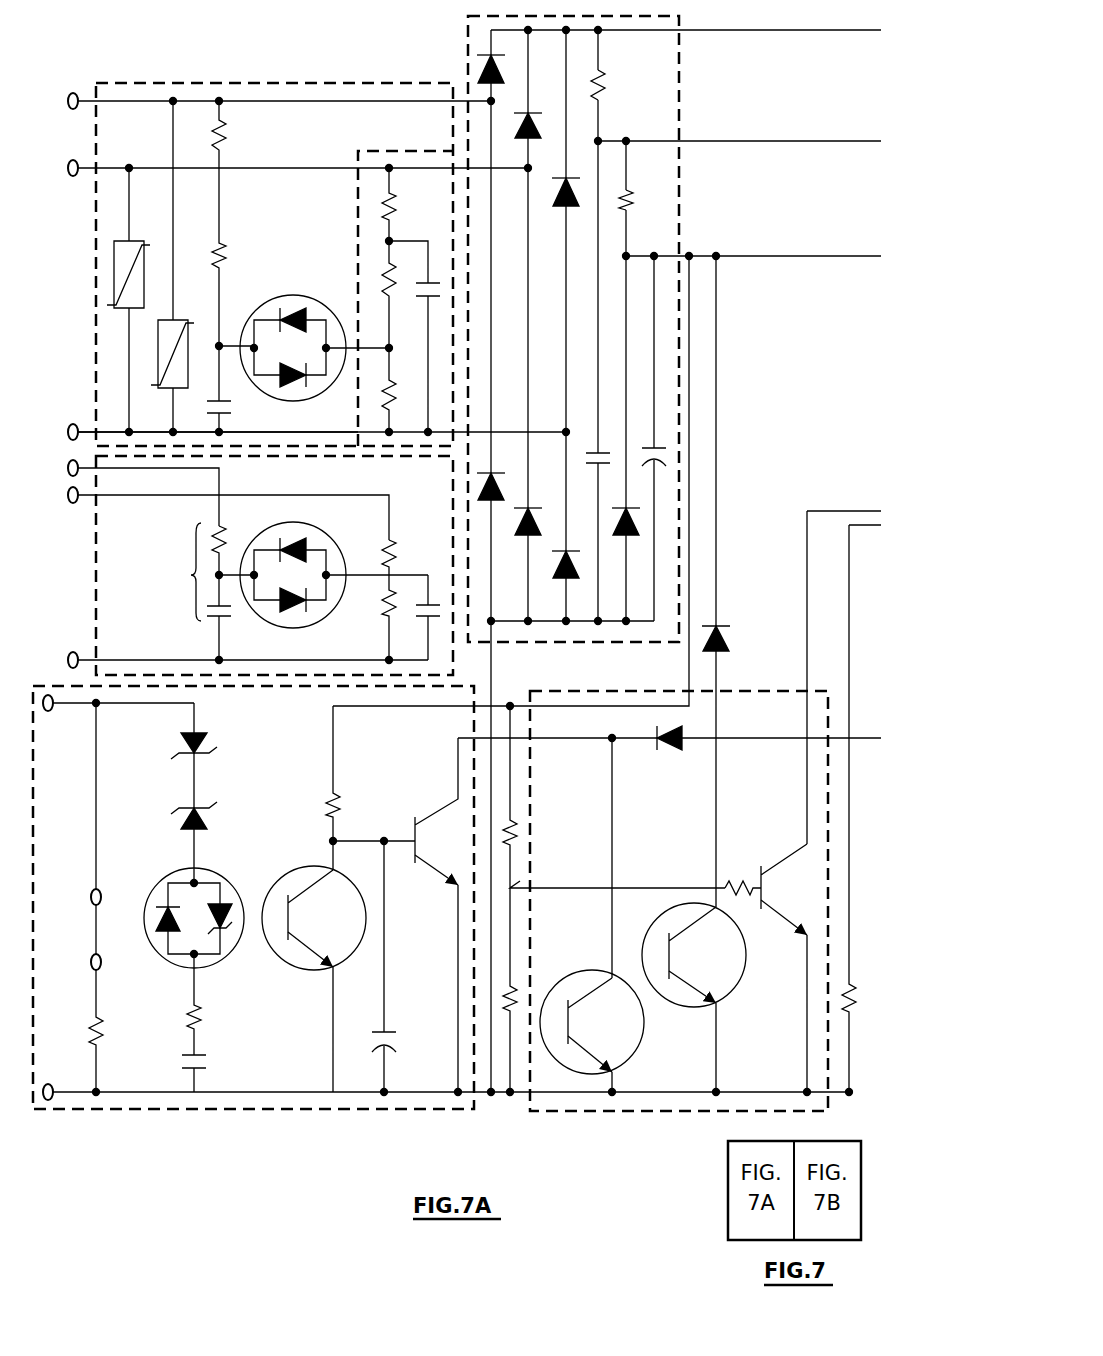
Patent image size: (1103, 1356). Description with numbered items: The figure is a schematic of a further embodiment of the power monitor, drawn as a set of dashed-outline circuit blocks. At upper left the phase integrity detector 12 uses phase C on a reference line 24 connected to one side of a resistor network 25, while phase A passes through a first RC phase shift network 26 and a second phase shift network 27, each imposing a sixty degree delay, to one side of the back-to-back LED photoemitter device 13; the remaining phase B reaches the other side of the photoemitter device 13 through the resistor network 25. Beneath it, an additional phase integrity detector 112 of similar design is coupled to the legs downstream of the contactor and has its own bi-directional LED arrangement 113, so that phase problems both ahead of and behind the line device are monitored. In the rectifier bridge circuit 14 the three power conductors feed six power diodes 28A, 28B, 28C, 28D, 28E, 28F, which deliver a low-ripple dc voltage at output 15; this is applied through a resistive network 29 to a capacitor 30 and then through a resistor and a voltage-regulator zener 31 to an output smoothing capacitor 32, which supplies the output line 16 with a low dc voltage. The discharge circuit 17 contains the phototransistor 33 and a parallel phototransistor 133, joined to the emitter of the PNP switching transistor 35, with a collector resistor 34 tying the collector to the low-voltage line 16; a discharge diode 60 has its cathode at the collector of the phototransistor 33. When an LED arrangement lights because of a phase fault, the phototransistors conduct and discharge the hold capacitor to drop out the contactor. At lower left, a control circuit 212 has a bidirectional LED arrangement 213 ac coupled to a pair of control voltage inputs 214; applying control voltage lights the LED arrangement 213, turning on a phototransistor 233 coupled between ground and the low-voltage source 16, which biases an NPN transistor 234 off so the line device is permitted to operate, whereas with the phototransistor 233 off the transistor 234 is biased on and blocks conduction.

The phase integrity detector 12 is at (318, 80).
The back-to-back LED photoemitter device 13 is at (290, 295).
The rectifier bridge circuit 14 is at (468, 60).
The output 15 is at (762, 27).
The output line 16 is at (718, 253).
The discharge circuit 17 is at (678, 1108).
The reference line 24 is at (290, 430).
The resistor network 25 is at (392, 148).
The first RC phase shift network 26 is at (200, 290).
The second phase shift network 27 is at (195, 591).
The power diode 28A is at (483, 52).
The power diode 28B is at (480, 478).
The power diode 28C is at (540, 126).
The power diode 28D is at (536, 535).
The power diode 28E is at (577, 195).
The power diode 28F is at (568, 578).
The resistive network 29 is at (602, 72).
The capacitor 30 is at (590, 450).
The voltage-regulator zener 31 is at (636, 522).
The output smoothing capacitor 32 is at (660, 445).
The phototransistor 33 is at (733, 992).
The collector resistor 34 is at (518, 878).
The PNP switching transistor 35 is at (797, 843).
The discharge diode 60 is at (672, 750).
The additional phase integrity detector 112 is at (452, 537).
The bi-directional LED arrangement 113 is at (330, 534).
The phototransistor 133 is at (640, 1040).
The control circuit 212 is at (268, 1107).
The bidirectional LED arrangement 213 is at (158, 882).
The control voltage inputs 214 is at (102, 898).
The phototransistor 233 is at (322, 968).
The NPN transistor 234 is at (445, 800).